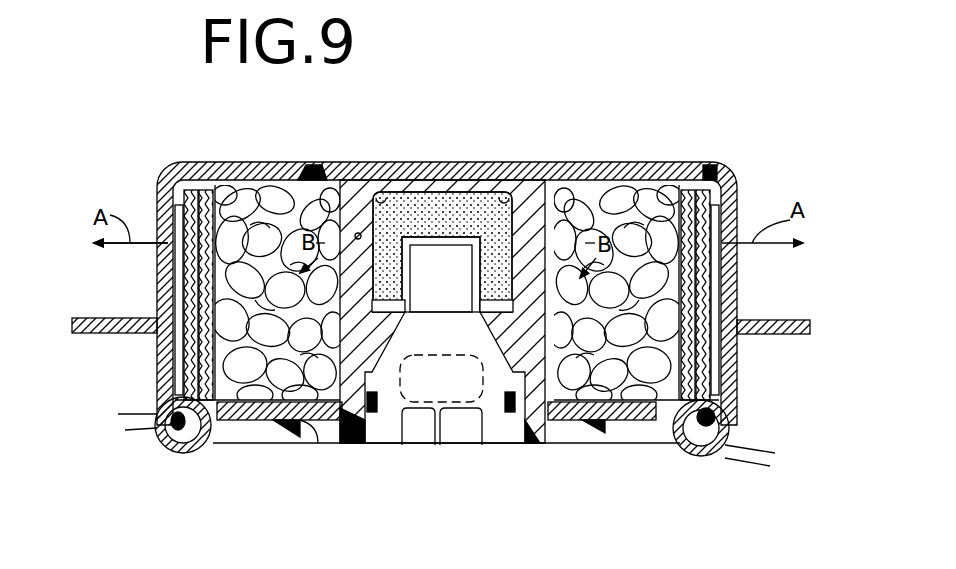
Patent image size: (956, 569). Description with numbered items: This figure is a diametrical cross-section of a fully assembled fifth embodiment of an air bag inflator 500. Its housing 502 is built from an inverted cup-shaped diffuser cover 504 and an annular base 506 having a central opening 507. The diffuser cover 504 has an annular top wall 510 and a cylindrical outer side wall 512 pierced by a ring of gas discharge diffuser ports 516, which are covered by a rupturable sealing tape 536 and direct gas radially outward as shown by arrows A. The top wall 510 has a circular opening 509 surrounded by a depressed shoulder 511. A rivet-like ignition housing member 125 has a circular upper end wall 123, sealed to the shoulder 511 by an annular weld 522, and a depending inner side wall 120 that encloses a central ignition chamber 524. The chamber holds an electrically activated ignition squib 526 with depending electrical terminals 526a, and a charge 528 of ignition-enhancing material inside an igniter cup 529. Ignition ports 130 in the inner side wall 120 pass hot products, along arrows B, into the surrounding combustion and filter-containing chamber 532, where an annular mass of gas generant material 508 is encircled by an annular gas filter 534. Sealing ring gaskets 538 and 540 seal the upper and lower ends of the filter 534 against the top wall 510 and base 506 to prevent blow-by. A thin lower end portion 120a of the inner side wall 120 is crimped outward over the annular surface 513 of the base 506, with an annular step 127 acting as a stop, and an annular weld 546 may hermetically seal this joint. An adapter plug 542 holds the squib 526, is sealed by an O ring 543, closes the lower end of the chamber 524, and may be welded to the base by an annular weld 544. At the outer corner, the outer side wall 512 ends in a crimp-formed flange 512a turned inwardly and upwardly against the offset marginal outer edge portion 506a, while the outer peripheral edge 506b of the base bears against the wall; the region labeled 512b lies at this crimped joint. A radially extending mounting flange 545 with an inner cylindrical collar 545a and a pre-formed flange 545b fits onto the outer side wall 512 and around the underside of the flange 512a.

The air bag inflator 500 is at (495, 522).
The housing 502 is at (116, 272).
The diffuser cover 504 is at (735, 161).
The base 506 is at (218, 440).
The marginal outer edge portion 506a is at (185, 452).
The outer peripheral edge 506b is at (145, 400).
The central opening 507 is at (353, 422).
The gas generant material 508 is at (312, 316).
The circular opening 509 is at (350, 215).
The annular top wall 510 is at (693, 170).
The shoulder 511 is at (590, 167).
The outer side wall 512 is at (168, 292).
The crimp-formed flange 512a is at (160, 422).
The seal flange 512b is at (150, 407).
The annular surface 513 is at (288, 428).
The gas discharge diffuser ports 516 is at (168, 278).
The annular weld 522 is at (307, 167).
The ignition chamber 524 is at (462, 290).
The ignition squib 526 is at (396, 405).
The electrical terminals 526a is at (448, 428).
The charge of ignition-enhancing material 528 is at (426, 192).
The igniter cup 529 is at (398, 200).
The combustion and filter-containing chamber 532 is at (215, 168).
The annular gas filter 534 is at (172, 192).
The sealing tape 536 is at (175, 250).
The sealing ring gasket 538 is at (185, 170).
The sealing ring gasket 540 is at (175, 376).
The adapter plug 542 is at (494, 412).
The O ring 543 is at (378, 420).
The annular weld 544 is at (594, 430).
The mounting flange 545 is at (72, 326).
The inner cylindrical collar 545a is at (152, 336).
The pre-formed flange 545b is at (160, 437).
The annular weld 546 is at (162, 442).
The inner side wall 120 is at (360, 225).
The lower end portion 120a is at (313, 427).
The upper end wall 123 is at (505, 185).
The ignition housing member 125 is at (464, 173).
The annular step 127 is at (540, 418).
The ignition ports 130 is at (356, 228).